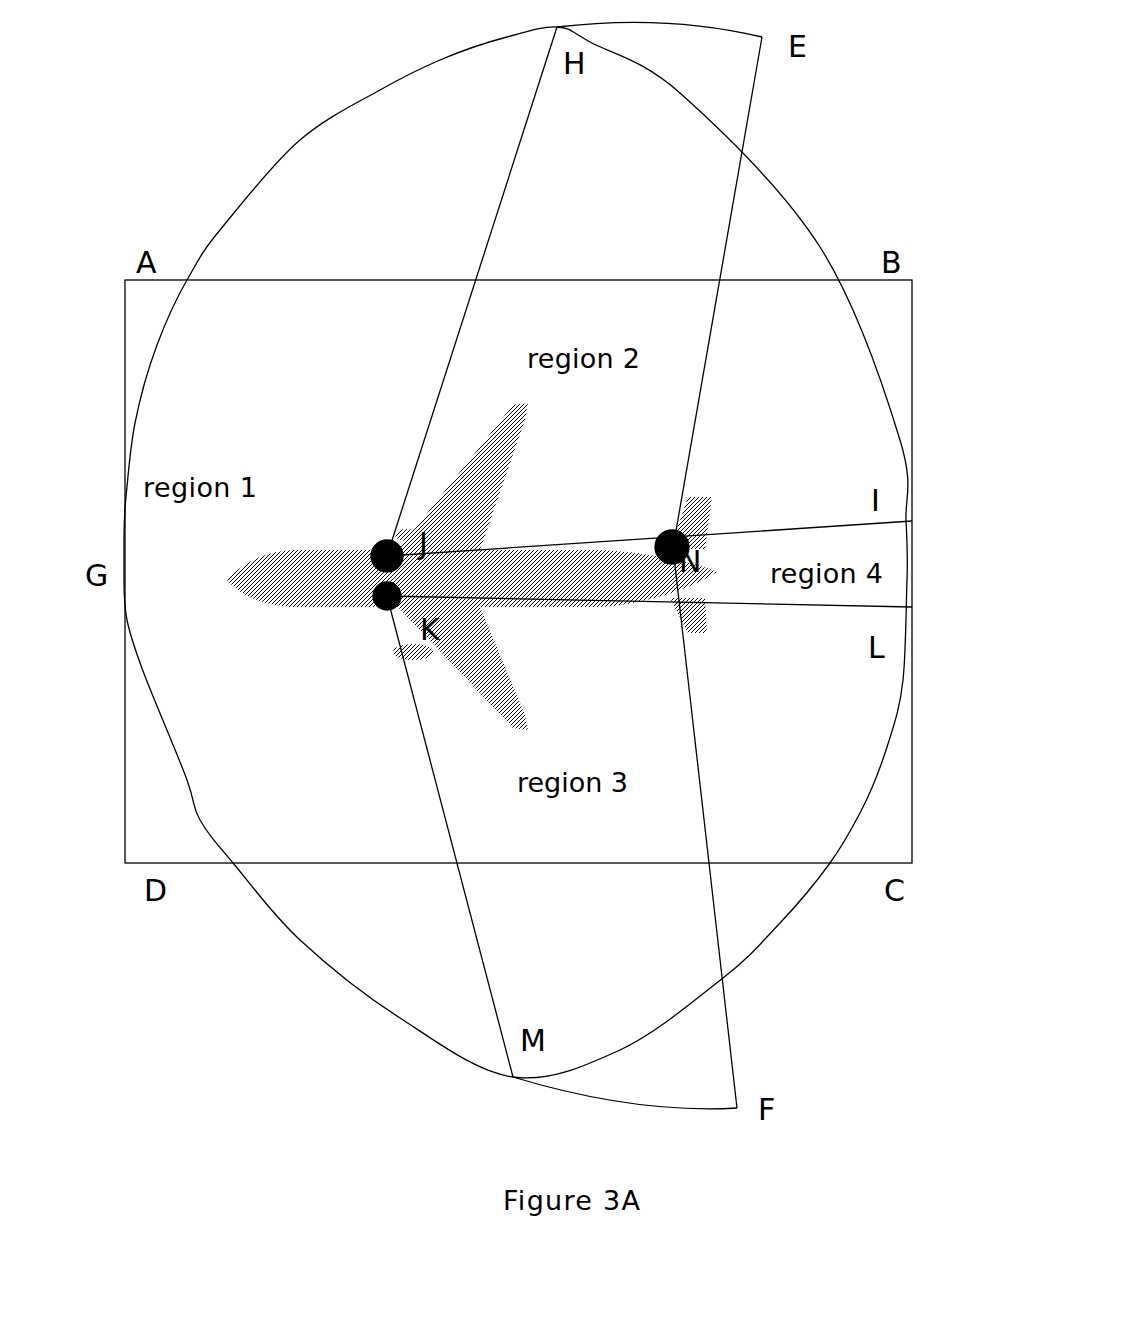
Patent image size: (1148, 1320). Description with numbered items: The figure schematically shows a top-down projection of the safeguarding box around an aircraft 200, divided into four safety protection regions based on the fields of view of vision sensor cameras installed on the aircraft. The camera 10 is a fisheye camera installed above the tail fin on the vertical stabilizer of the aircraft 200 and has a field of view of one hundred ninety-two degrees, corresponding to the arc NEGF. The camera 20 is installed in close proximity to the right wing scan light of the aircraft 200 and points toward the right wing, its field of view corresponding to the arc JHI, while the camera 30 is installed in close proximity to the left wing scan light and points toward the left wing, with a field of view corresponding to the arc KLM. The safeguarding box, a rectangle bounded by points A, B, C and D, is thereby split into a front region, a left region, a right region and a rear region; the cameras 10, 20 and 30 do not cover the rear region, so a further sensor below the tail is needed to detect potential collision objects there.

The aircraft 200 is at (455, 445).
The camera 10 is at (600, 533).
The camera 20 is at (322, 537).
The camera 30 is at (317, 615).